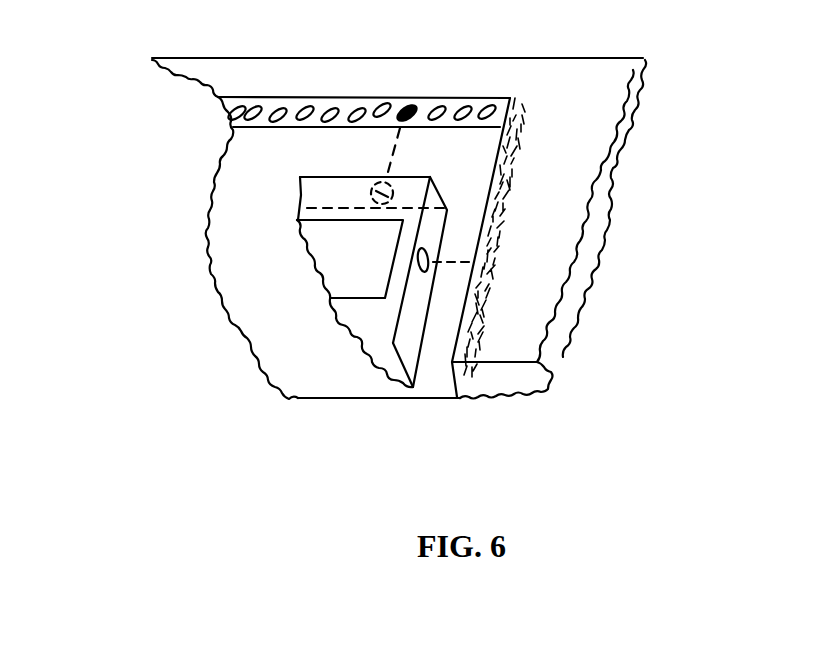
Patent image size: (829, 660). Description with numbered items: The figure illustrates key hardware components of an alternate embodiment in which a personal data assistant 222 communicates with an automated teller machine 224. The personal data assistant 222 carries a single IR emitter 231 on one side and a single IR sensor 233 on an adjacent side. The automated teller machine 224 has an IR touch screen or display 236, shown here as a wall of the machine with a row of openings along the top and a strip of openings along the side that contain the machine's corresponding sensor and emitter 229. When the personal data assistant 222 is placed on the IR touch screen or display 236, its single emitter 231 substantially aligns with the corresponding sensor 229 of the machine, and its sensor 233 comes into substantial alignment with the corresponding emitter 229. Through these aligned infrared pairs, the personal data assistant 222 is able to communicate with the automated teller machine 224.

The personal data assistant 222 is at (288, 308).
The automated teller machine 224 is at (92, 161).
The corresponding sensor and emitter 229 is at (400, 111).
The single IR emitter 231 is at (425, 250).
The single IR sensor 233 is at (390, 177).
The IR touch screen or display 236 is at (246, 375).